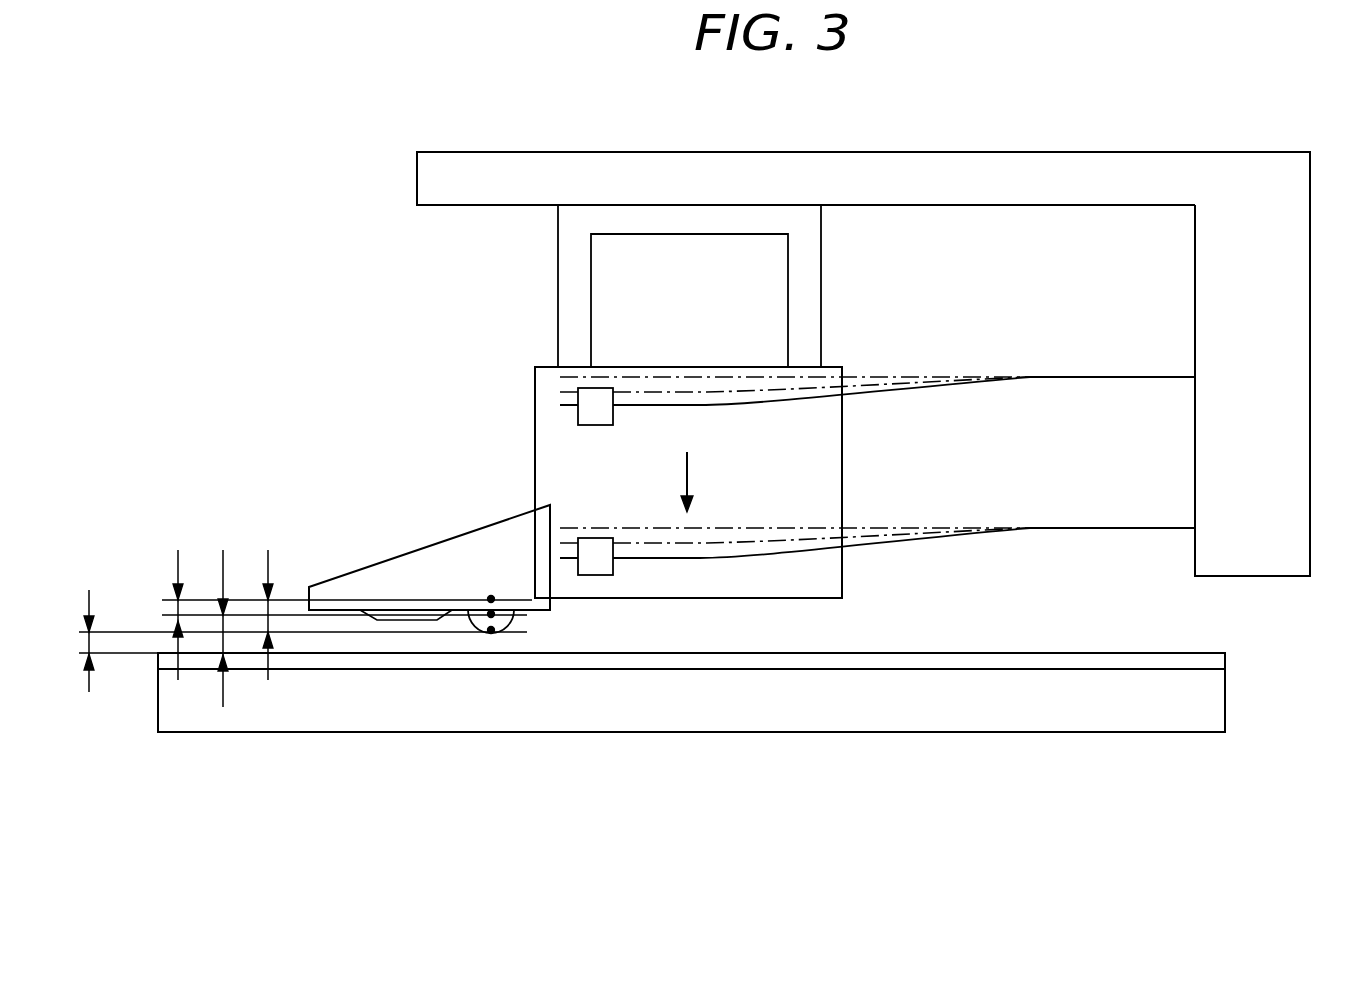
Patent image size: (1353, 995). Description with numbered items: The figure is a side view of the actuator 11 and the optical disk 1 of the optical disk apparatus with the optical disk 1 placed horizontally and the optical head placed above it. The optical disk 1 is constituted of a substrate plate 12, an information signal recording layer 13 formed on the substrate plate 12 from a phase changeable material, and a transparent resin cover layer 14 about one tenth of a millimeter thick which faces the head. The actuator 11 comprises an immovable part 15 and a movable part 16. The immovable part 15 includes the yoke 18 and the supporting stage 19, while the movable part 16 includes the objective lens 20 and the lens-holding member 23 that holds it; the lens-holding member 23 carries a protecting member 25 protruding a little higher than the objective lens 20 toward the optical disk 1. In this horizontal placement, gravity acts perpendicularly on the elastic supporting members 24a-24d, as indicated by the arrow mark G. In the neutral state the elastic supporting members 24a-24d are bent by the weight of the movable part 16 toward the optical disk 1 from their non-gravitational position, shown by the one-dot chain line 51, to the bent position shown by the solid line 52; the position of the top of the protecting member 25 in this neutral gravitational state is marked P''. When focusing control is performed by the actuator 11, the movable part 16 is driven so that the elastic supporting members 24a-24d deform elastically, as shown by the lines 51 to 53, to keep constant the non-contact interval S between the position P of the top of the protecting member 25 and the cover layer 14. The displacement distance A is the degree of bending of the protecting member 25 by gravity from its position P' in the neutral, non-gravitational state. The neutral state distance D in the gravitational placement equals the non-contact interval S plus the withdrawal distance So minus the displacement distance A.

The optical disk 1 is at (1050, 750).
The actuator 11 is at (1268, 613).
The substrate plate 12 is at (888, 715).
The information signal recording layer 13 is at (1003, 666).
The cover layer 14 is at (1112, 658).
The immovable part 15 is at (398, 230).
The movable part 16 is at (505, 408).
The yoke 18 is at (566, 269).
The supporting stage 19 is at (1050, 167).
The objective lens 20 is at (390, 613).
The lens-holding member 23 is at (823, 469).
The elastic supporting members 24a-24d is at (877, 461).
The protecting member 25 is at (480, 612).
The one-dot chain line 51 is at (628, 377).
The solid line 52 is at (706, 405).
The one-dot chain line 53 is at (671, 392).
The arrow mark G is at (700, 482).
The neutral state distance D is at (76, 641).
The non-contact interval S is at (223, 640).
The withdrawal distance So is at (162, 600).
The displacement distance A is at (265, 600).
The position of the top of the protecting member P is at (539, 629).
The position of the top of the protecting member P' is at (500, 568).
The position of the top of the protecting member P'' is at (501, 678).